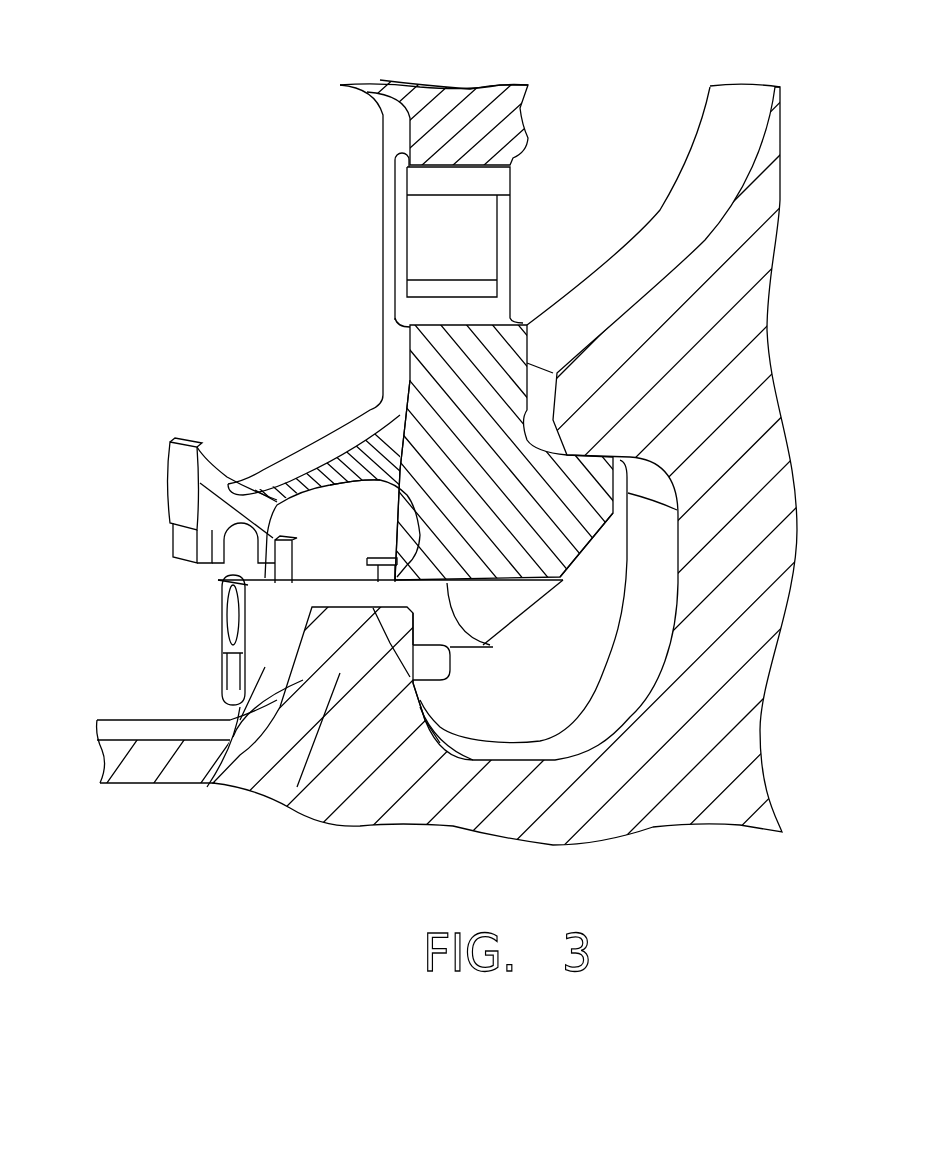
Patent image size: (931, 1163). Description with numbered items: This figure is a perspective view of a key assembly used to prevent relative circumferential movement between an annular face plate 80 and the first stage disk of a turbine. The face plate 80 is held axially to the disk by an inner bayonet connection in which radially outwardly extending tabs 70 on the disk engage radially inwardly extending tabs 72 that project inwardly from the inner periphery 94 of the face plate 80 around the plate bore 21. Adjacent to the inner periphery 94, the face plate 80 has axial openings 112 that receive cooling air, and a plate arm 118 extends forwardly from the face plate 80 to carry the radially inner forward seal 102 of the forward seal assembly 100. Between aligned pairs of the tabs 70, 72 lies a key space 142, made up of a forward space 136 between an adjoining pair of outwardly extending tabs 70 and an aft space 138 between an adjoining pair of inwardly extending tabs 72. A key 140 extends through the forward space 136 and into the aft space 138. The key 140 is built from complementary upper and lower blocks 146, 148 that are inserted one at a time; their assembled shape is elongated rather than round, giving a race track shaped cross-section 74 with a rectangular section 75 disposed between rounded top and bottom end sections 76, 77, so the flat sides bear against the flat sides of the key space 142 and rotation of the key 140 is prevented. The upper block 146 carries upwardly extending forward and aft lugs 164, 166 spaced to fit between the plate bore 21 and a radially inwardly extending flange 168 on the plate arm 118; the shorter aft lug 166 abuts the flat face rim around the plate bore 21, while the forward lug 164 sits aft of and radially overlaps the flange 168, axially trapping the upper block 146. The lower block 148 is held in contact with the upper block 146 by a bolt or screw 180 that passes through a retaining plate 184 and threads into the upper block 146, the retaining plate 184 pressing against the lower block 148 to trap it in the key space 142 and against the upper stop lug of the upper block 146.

The plate bore 21 is at (585, 547).
The radially outwardly extending tabs 70 is at (317, 823).
The radially inwardly extending tabs 72 is at (433, 627).
The race track shaped cross-section 74 is at (207, 613).
The rectangular section 75 is at (243, 660).
The outer or top end section 76 is at (430, 590).
The inner or bottom end section 77 is at (447, 683).
The face plate 80 is at (445, 85).
The inner periphery 94 is at (513, 583).
The forward seal assembly 100 is at (172, 498).
The radially inner forward seal 102 is at (168, 465).
The axial openings 112 is at (450, 233).
The plate arm 118 is at (293, 463).
The forward space 136 is at (427, 720).
The aft space 138 is at (480, 620).
The key 140 is at (260, 600).
The key space 142 is at (327, 578).
The upper block 146 is at (322, 490).
The lower block 148 is at (233, 777).
The forward lug 164 is at (272, 497).
The aft lug 166 is at (403, 415).
The radially inwardly extending flange 168 is at (230, 543).
The bolt or screw 180 is at (220, 620).
The retaining plate 184 is at (230, 693).